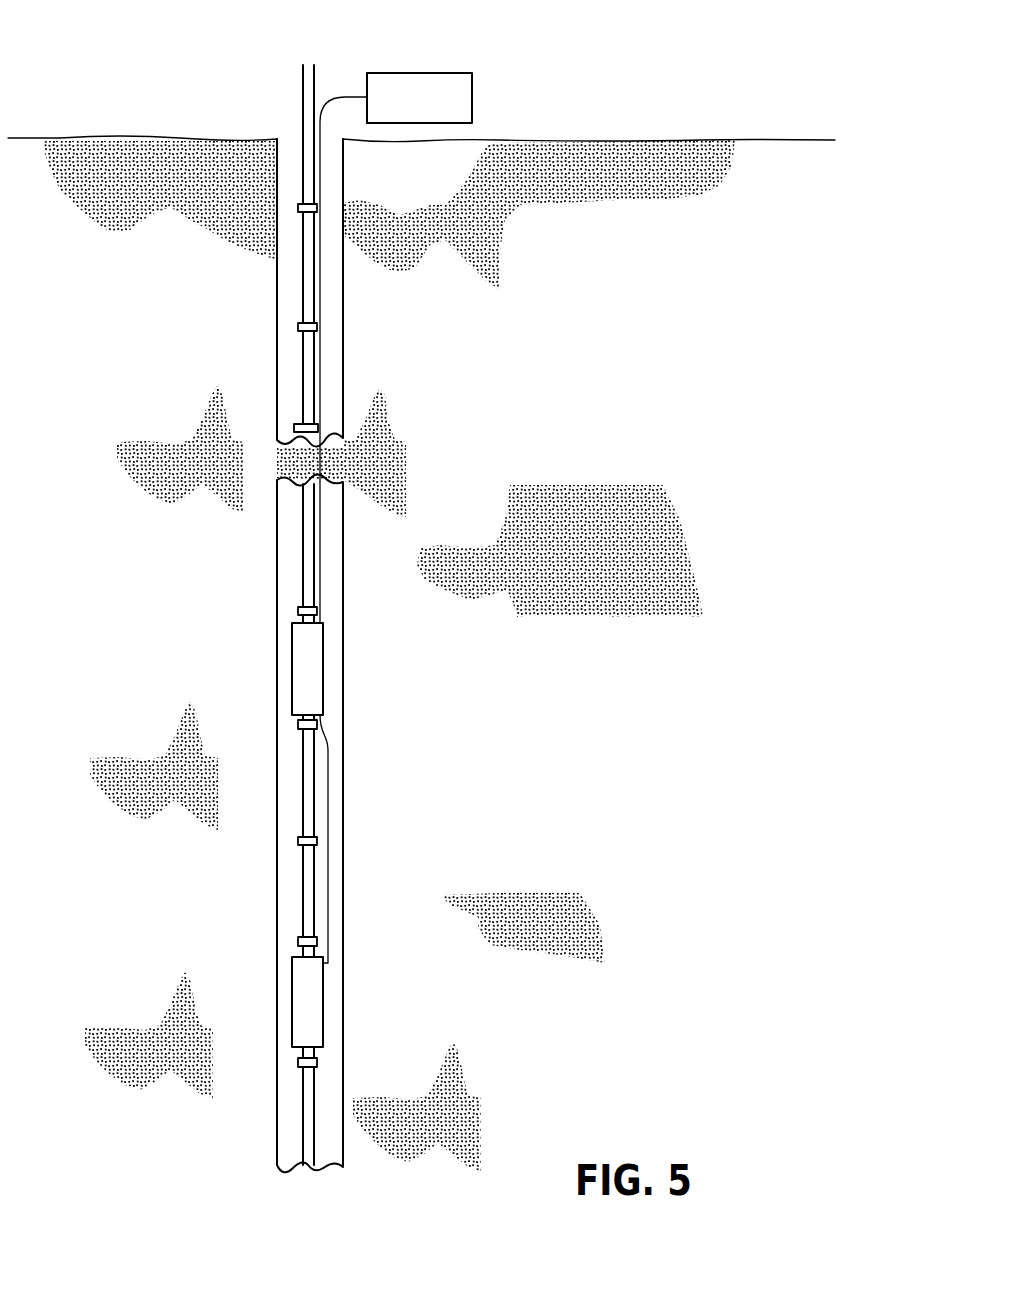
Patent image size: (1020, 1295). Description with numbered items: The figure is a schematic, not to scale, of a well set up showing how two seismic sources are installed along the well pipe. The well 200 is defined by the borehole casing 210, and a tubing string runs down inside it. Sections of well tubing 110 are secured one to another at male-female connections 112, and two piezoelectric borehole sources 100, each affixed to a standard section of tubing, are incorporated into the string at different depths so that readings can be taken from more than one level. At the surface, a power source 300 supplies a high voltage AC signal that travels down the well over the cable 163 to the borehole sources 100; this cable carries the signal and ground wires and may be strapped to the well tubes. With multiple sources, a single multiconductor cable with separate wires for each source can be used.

The piezoelectric borehole source 100 is at (328, 657).
The production tubing 110 is at (314, 782).
The male-female connections 112 is at (316, 327).
The coaxial cable 163 is at (321, 181).
The well 200 is at (256, 291).
The borehole casing 210 is at (343, 722).
The power source 300 is at (422, 66).